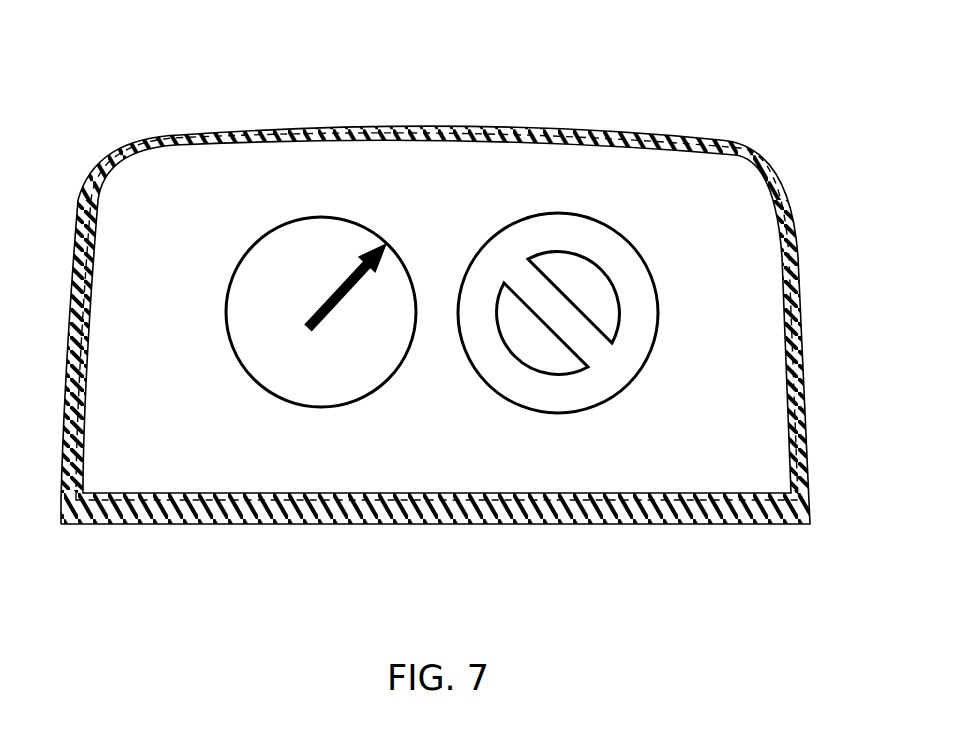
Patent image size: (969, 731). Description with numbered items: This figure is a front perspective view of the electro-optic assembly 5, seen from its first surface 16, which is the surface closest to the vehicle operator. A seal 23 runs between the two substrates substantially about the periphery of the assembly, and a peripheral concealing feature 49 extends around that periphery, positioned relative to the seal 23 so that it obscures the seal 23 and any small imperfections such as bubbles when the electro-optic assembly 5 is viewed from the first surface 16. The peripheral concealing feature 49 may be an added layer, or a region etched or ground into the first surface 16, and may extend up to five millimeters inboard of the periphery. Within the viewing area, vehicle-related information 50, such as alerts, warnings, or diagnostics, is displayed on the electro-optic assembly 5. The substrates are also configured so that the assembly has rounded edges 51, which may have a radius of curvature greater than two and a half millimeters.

The electro-optic assembly 5 is at (462, 300).
The first surface 16 is at (750, 418).
The seal 23 is at (263, 132).
The peripheral concealing feature 49 is at (430, 128).
The vehicle-related information 50 is at (330, 407).
The rounded edges 51 is at (117, 152).